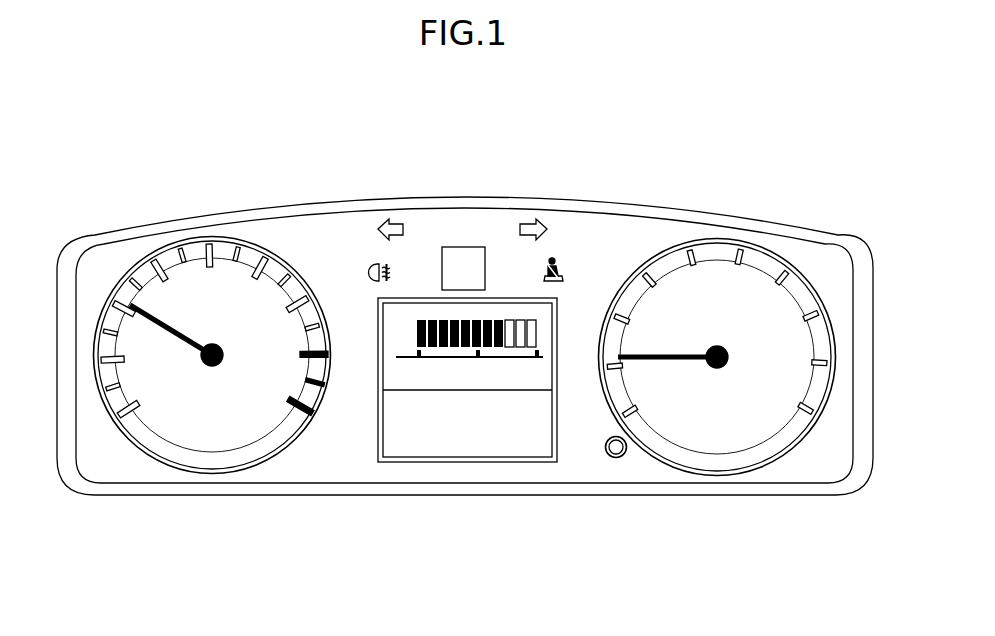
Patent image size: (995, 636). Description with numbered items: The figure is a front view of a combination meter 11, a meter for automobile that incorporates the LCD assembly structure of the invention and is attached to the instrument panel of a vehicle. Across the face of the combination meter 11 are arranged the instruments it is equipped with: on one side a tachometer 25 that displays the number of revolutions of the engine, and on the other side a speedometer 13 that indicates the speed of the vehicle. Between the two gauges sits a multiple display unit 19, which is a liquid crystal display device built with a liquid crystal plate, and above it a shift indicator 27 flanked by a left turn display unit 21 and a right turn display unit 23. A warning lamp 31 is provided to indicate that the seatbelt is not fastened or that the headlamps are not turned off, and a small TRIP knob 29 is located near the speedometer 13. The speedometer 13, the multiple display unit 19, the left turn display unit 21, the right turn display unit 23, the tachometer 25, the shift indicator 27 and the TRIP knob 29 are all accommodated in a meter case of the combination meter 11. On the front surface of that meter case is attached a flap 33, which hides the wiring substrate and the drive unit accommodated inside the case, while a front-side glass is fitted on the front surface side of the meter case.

The combination meter 11 is at (128, 164).
The speedometer 13 is at (721, 263).
The multiple display unit 19 is at (432, 442).
The left turn display unit 21 is at (393, 226).
The right turn display unit 23 is at (528, 228).
The tachometer 25 is at (192, 283).
The shift indicator 27 is at (461, 245).
The TRIP knob 29 is at (614, 459).
The warning lamp 31 is at (366, 273).
The flap 33 is at (202, 493).